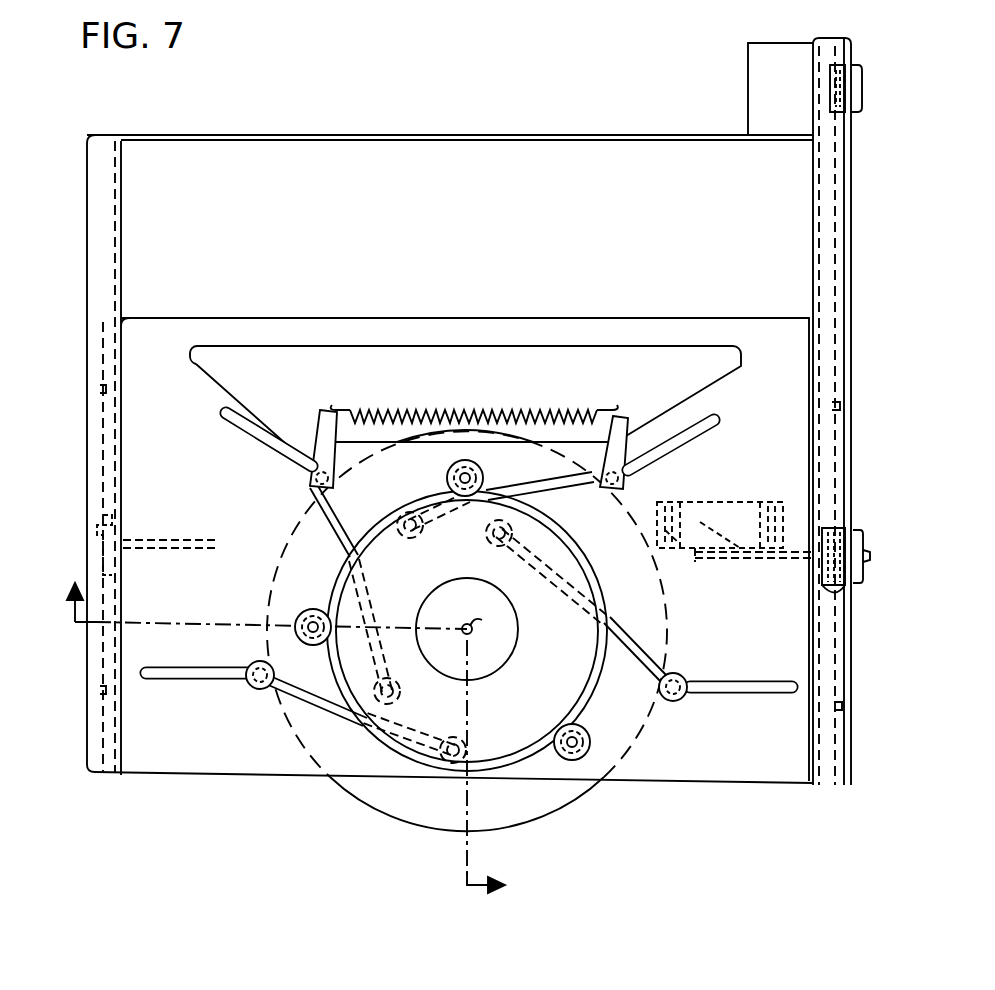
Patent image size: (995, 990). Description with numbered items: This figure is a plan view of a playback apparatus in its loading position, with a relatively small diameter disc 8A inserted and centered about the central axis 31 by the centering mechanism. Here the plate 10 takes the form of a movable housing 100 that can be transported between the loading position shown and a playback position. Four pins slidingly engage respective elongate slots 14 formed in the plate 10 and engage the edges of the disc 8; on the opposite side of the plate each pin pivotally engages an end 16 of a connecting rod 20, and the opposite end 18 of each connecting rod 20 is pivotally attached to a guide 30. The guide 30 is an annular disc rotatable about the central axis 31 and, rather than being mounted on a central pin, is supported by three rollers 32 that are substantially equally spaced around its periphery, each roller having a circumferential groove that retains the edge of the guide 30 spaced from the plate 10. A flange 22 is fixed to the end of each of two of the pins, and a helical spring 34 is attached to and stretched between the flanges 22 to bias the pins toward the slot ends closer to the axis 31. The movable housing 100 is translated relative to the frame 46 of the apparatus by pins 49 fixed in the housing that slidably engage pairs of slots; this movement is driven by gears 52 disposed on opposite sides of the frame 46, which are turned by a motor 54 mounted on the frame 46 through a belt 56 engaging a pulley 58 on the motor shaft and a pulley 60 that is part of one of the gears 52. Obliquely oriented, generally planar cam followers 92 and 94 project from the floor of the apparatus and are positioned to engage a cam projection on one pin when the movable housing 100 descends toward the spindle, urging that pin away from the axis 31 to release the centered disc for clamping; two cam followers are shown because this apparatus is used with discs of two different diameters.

The plate 10 is at (740, 772).
The movable housing 100 is at (172, 280).
The frame 46 is at (92, 142).
The belt 56 is at (850, 362).
The motor 54 is at (756, 84).
The pulley 58 is at (846, 66).
The pulley 60 is at (863, 534).
The gear 52 is at (97, 532).
The pin 49 is at (100, 393).
The cam follower 94 is at (740, 512).
The cam follower 92 is at (698, 562).
The relatively small diameter disc 8A is at (545, 790).
The guide 30 is at (560, 676).
The central axis 31 is at (467, 629).
The disc 8 is at (297, 728).
The opposite end 18 is at (398, 697).
The connecting rod 20 is at (302, 702).
The flange 22 is at (320, 424).
The helical spring 34 is at (497, 412).
The elongate slot 14 is at (242, 428).
The end 16 is at (254, 662).
The roller 32 is at (478, 476).